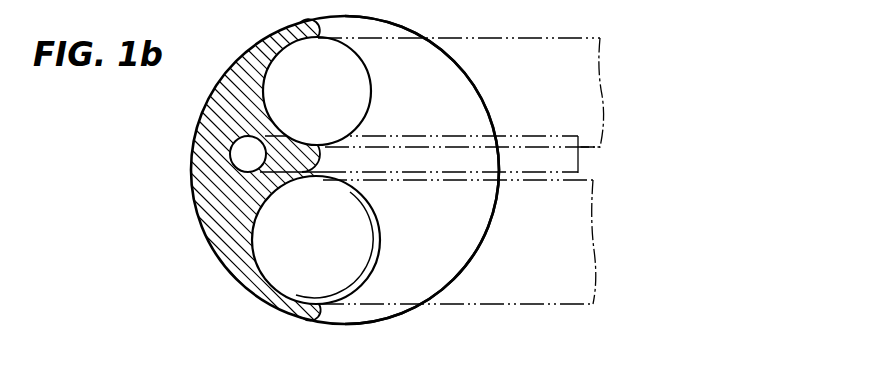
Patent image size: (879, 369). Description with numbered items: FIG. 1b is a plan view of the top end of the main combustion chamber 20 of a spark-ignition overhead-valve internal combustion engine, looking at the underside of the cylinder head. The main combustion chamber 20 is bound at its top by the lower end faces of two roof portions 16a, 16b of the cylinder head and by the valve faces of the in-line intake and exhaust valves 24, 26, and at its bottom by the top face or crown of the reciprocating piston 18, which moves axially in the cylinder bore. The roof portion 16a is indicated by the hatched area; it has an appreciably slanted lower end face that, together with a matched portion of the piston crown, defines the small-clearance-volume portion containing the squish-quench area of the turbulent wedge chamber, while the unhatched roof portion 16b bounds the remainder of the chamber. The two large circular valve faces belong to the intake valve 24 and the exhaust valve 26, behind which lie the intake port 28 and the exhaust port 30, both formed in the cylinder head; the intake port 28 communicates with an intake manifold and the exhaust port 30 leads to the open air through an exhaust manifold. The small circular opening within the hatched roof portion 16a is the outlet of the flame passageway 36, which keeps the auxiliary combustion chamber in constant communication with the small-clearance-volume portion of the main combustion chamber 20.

The roof portion 16a is at (253, 125).
The roof portion 16b is at (452, 215).
The reciprocating piston 18 is at (178, 0).
The main combustion chamber 20 is at (466, 275).
The intake valve 24 is at (377, 243).
The exhaust valve 26 is at (371, 78).
The intake port 28 is at (522, 308).
The exhaust port 30 is at (486, 38).
The flame passageway 36 is at (235, 152).